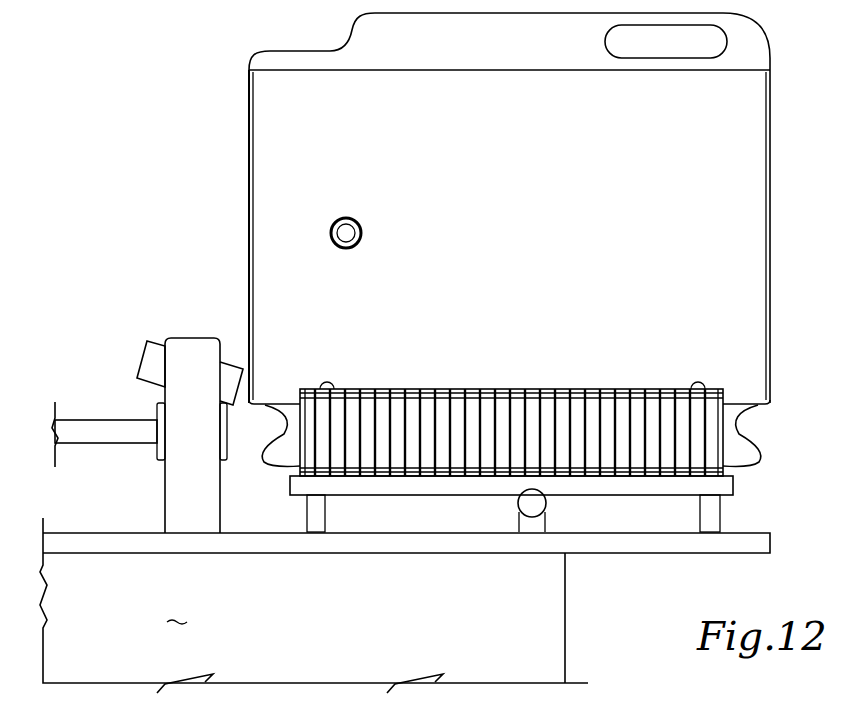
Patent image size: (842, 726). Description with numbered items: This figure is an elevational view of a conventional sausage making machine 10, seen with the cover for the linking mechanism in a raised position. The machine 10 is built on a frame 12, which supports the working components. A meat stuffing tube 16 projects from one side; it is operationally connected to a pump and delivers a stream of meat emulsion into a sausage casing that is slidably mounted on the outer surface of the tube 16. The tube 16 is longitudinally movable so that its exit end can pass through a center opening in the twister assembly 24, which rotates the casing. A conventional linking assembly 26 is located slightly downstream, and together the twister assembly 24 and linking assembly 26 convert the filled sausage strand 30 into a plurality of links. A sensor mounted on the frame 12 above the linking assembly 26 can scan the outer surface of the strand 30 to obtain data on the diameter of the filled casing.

The sausage making machine 10 is at (146, 242).
The frame 12 is at (125, 532).
The meat stuffing tube 16 is at (107, 420).
The twister assembly 24 is at (187, 338).
The linking assembly 26 is at (728, 465).
The filled sausage strand 30 is at (329, 234).